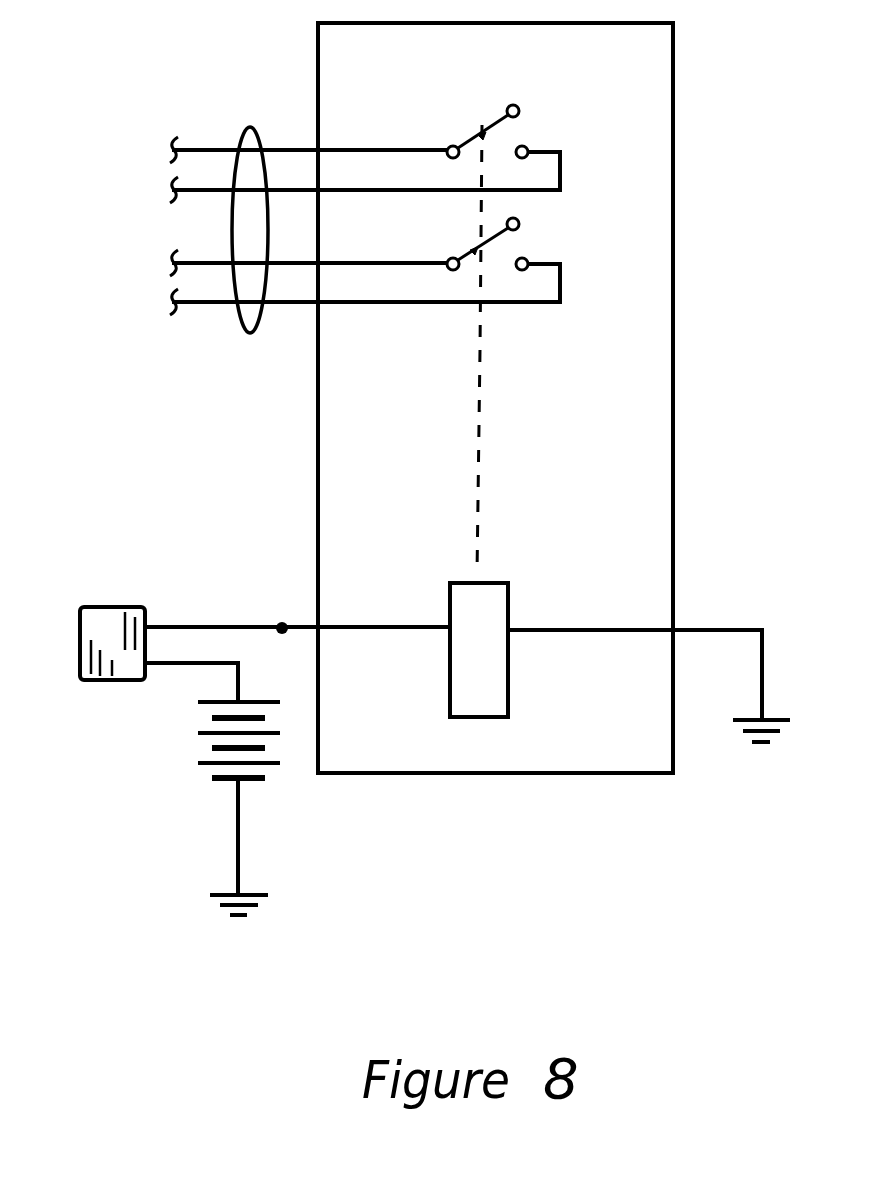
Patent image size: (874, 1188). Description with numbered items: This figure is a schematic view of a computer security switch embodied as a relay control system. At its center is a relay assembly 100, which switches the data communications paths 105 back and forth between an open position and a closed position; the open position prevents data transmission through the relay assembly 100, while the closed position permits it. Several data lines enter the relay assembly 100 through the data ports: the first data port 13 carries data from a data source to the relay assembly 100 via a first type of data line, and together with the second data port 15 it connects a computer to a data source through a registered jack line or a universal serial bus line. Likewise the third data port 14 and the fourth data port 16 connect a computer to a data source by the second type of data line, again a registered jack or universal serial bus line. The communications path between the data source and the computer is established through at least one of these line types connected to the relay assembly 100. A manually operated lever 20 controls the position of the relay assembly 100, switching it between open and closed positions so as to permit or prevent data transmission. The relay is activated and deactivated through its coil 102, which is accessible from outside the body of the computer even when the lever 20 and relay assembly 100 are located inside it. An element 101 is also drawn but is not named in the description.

The relay assembly 100 is at (676, 116).
The data communications paths 105 is at (250, 127).
The second data port 15 is at (271, 149).
The fourth data port 16 is at (327, 186).
The first data port 13 is at (271, 268).
The third data port 14 is at (332, 297).
The manually operated lever 20 is at (107, 607).
The battery 101 is at (200, 735).
The coil 102 is at (450, 678).